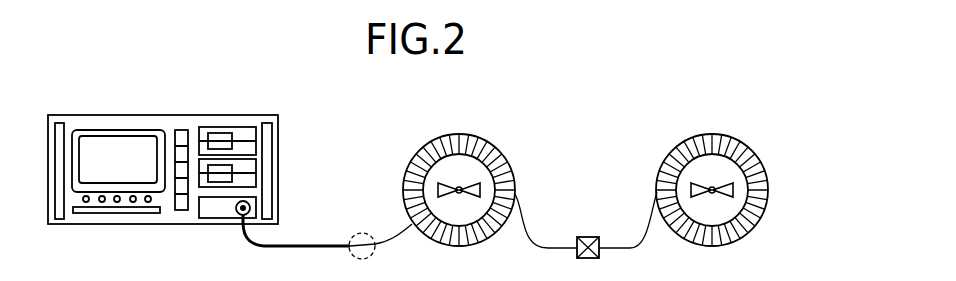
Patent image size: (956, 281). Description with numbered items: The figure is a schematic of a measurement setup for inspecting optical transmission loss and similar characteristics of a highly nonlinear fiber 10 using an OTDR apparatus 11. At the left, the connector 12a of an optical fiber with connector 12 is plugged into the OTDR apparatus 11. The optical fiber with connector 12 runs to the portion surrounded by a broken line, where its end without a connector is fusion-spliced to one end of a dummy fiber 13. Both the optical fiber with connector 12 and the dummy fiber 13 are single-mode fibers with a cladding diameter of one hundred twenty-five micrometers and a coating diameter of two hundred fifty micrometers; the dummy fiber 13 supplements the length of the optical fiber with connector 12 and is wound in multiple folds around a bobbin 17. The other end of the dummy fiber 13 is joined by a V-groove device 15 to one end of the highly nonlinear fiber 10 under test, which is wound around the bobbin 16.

The highly nonlinear fiber 10 is at (632, 242).
The OTDR apparatus 11 is at (99, 226).
The optical fiber with connector 12 is at (292, 242).
The connector 12a is at (232, 216).
The dummy fiber 13 is at (392, 237).
The V-groove device 15 is at (588, 237).
The bobbin 16 is at (740, 138).
The bobbin 17 is at (457, 133).